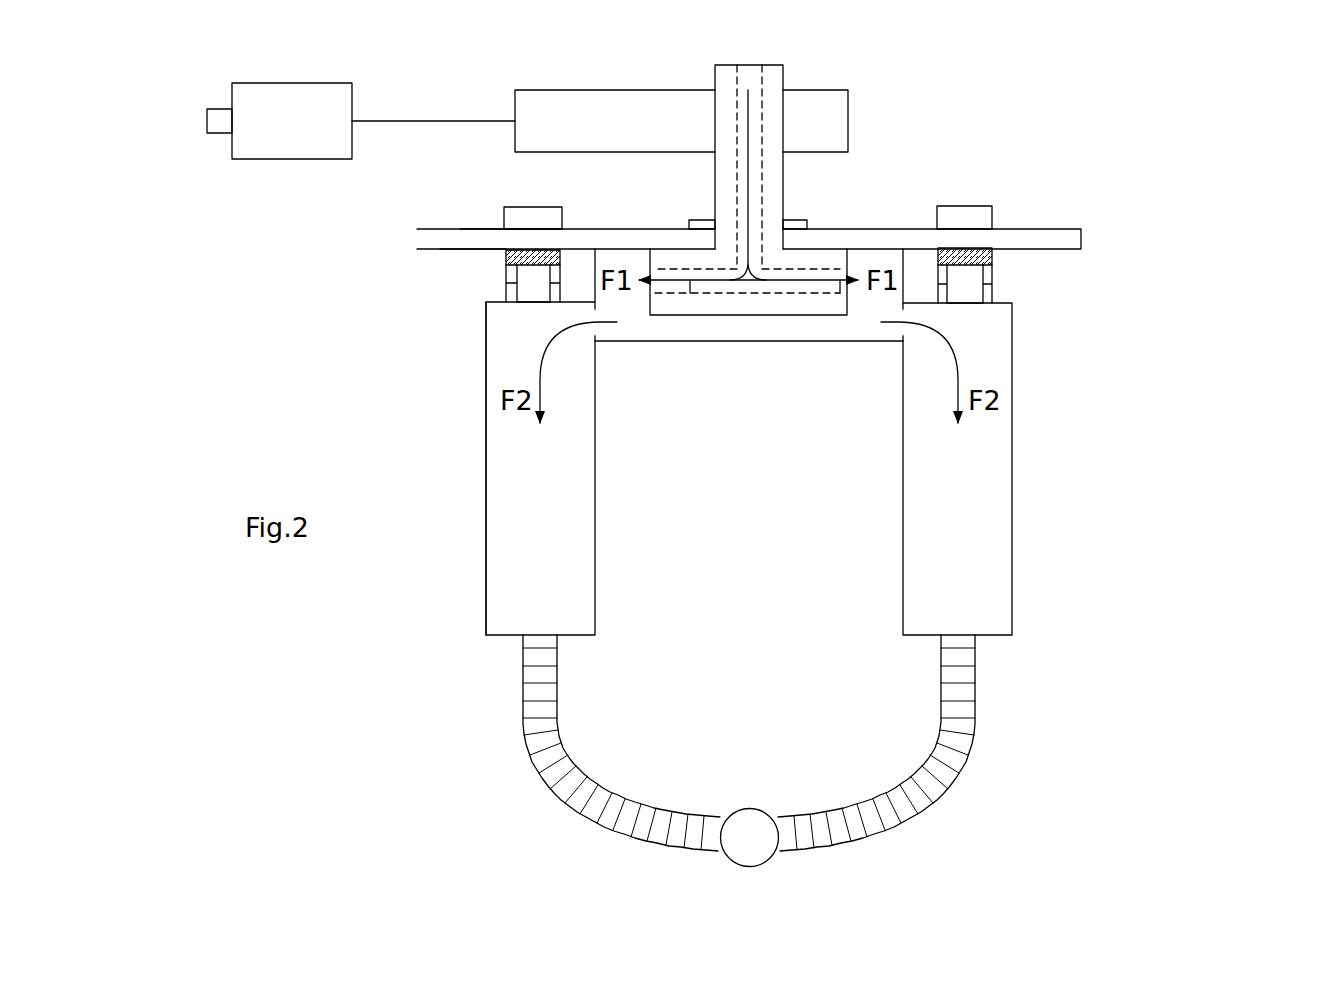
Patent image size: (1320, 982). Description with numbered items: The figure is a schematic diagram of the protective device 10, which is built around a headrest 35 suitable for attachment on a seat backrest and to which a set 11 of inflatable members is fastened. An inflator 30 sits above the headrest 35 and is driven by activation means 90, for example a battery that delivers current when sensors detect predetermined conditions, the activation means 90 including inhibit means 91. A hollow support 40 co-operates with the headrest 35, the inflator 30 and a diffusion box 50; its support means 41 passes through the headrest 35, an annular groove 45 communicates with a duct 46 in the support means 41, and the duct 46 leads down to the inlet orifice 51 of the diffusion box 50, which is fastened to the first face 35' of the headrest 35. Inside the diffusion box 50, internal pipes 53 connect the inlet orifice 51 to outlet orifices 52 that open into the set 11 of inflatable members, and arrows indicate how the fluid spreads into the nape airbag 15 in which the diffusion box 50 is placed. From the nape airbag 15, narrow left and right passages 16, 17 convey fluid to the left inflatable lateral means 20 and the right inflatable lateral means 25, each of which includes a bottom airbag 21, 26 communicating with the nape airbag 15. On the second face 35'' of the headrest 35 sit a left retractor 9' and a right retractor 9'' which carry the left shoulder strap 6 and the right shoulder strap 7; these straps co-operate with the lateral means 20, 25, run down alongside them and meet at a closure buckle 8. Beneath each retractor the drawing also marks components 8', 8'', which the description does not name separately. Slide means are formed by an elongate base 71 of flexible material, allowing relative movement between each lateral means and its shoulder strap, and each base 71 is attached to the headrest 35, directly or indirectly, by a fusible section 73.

The left shoulder strap 6 is at (968, 687).
The right shoulder strap 7 is at (530, 687).
The closure buckle 8 is at (750, 810).
The right seal block 8' is at (996, 228).
The left seal block 8'' is at (561, 230).
The left retractor 9' is at (964, 183).
The right retractor 9'' is at (510, 192).
The device 10 is at (1202, 217).
The set of inflatable members 11 is at (1167, 451).
The nape airbag 15 is at (715, 342).
The left passage 16 is at (904, 331).
The right passage 17 is at (596, 331).
The left inflatable lateral means 20 is at (1107, 418).
The bottom airbag 21 is at (901, 478).
The right inflatable lateral means 25 is at (448, 458).
The bottom airbag 26 is at (597, 478).
The inflator 30 is at (618, 90).
The headrest 35 is at (714, 225).
The first face 35' is at (440, 274).
The second face 35'' is at (479, 192).
The hollow support 40 is at (779, 161).
The support means 41 is at (783, 168).
The annular groove 45 is at (783, 78).
The duct 46 is at (740, 178).
The diffusion box 50 is at (780, 316).
The inlet orifice 51 is at (768, 263).
The outlet orifices 52 is at (845, 286).
The internal pipes 53 is at (690, 294).
The elongate base 71 is at (550, 281).
The fusible section 73 is at (550, 268).
The activation means 90 is at (290, 160).
The inhibit means 91 is at (205, 120).